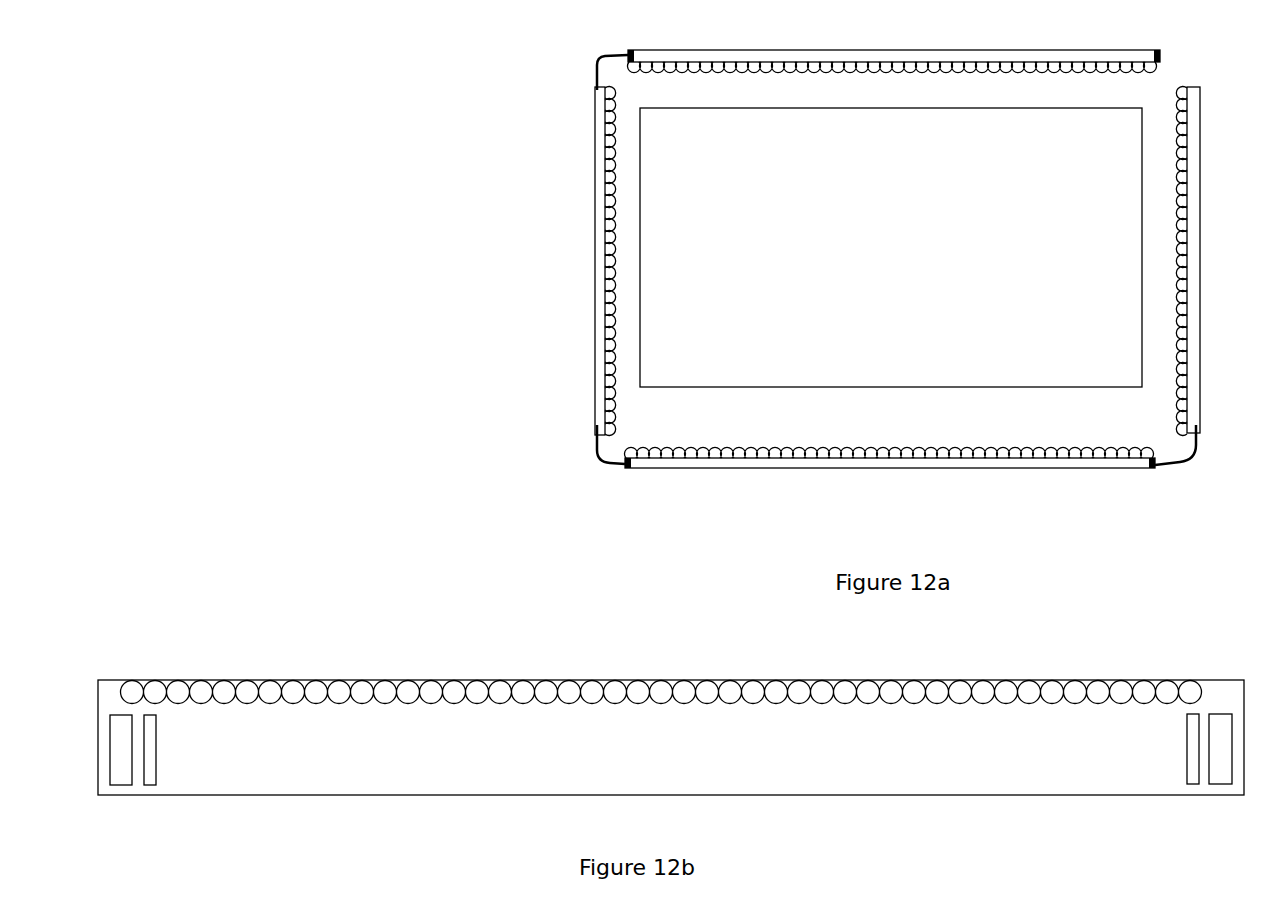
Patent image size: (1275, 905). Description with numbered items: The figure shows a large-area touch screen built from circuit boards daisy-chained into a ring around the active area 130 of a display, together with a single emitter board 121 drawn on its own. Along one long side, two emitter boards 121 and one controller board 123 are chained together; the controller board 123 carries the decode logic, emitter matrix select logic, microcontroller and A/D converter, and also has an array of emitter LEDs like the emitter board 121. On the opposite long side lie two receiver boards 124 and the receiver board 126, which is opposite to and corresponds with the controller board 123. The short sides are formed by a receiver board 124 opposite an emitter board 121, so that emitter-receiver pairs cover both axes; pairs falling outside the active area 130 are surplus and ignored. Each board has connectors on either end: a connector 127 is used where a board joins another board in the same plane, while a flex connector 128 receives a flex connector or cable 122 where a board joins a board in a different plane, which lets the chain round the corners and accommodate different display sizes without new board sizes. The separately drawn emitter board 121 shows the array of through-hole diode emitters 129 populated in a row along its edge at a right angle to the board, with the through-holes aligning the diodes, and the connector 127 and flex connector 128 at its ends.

In FIG. 12A, the emitter board 121 is at (897, 281).
In FIG. 12B, the emitter board 121 is at (315, 795).
In FIG. 12A, the flex connector or cable 122 is at (597, 62).
In FIG. 12A, the controller board 123 is at (785, 470).
In FIG. 12A, the receiver board 124 is at (595, 145).
In FIG. 12A, the receiver board 126 is at (662, 72).
In FIG. 12A, the connector 127 is at (818, 62).
In FIG. 12B, the connector 127 is at (115, 740).
In FIG. 12A, the flex connector 128 is at (631, 50).
In FIG. 12B, the flex connector 128 is at (156, 740).
In FIG. 12B, the array of through-hole diode emitters 129 is at (312, 680).
In FIG. 12A, the active area 130 is at (640, 310).